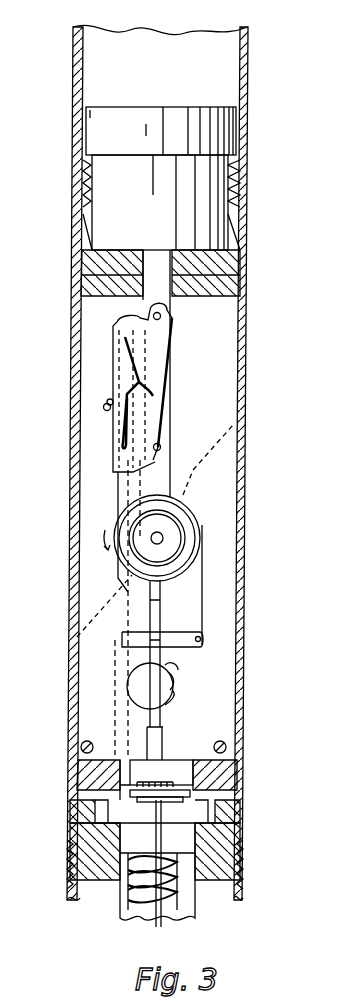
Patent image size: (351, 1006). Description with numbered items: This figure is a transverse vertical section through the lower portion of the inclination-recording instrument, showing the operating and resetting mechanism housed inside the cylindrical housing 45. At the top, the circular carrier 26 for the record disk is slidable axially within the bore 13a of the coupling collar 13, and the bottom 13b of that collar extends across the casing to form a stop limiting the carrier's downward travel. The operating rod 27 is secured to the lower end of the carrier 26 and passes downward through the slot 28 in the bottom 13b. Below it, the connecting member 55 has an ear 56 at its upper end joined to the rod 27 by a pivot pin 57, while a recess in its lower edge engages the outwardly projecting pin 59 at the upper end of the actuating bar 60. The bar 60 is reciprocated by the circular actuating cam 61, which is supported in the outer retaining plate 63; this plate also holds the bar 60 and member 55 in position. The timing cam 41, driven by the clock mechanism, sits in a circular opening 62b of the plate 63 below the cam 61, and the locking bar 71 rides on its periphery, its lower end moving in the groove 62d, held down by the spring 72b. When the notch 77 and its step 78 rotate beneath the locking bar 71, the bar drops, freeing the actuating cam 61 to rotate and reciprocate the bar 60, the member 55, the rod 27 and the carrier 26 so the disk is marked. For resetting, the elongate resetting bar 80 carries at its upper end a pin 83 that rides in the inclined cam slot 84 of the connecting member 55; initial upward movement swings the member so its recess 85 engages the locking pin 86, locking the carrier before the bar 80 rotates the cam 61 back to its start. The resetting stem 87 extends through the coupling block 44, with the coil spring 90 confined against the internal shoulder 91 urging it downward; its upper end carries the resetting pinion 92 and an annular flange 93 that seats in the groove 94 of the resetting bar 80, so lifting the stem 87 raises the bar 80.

The coupling collar 13 is at (238, 225).
The bore 13a is at (93, 200).
The bottom 13b is at (93, 258).
The carrier 26 is at (213, 136).
The operating rod 27 is at (245, 258).
The slot 28 is at (80, 280).
The timing cam 41 is at (178, 663).
The coupling block 44 is at (78, 830).
The cylindrical housing 45 is at (240, 503).
The connecting member 55 is at (160, 365).
The ear 56 is at (168, 326).
The pivot pin 57 is at (162, 316).
The pin 59 is at (160, 447).
The actuating bar 60 is at (172, 468).
The actuating cam 61 is at (200, 522).
The circular opening 62b is at (128, 688).
The groove 62d is at (165, 728).
The retaining plate 63 is at (90, 655).
The locking bar 71 is at (160, 598).
The spring 72b is at (203, 622).
The notch 77 is at (176, 677).
The step 78 is at (180, 690).
The resetting bar 80 is at (80, 770).
The pin 83 is at (122, 437).
The cam slot 84 is at (138, 383).
The recess 85 is at (108, 402).
The locking pin 86 is at (103, 407).
The resetting stem 87 is at (165, 833).
The coil spring 90 is at (175, 858).
The internal shoulder 91 is at (100, 895).
The resetting pinion 92 is at (183, 787).
The annular flange 93 is at (190, 792).
The groove 94 is at (100, 788).